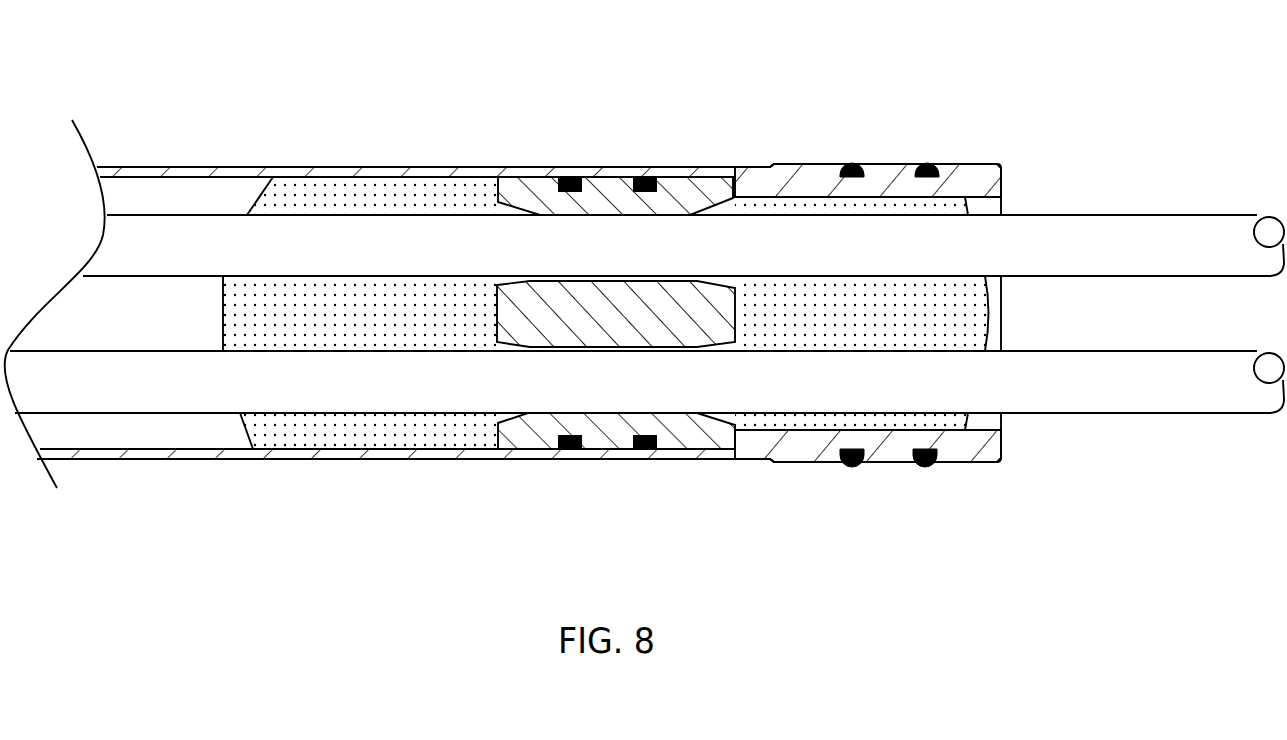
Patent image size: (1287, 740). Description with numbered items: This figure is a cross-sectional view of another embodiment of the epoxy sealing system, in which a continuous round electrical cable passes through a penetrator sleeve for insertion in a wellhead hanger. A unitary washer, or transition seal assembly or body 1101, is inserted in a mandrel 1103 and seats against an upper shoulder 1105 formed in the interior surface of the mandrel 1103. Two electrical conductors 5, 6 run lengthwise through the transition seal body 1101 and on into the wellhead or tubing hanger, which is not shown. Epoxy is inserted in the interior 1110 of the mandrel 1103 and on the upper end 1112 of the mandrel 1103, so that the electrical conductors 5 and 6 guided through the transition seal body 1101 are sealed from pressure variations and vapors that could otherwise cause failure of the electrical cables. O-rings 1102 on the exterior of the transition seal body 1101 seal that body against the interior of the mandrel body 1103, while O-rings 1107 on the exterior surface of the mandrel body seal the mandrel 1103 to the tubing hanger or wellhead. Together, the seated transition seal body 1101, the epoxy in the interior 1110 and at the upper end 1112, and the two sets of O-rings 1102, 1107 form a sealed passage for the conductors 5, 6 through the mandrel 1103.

The electrical conductor 5 is at (1090, 264).
The electrical conductor 6 is at (1090, 405).
The transition seal assembly or body 1101 is at (600, 193).
The O-rings 1102 is at (567, 449).
The mandrel 1103 is at (790, 447).
The upper shoulder 1105 is at (768, 165).
The O-rings 1107 is at (850, 163).
The interior of the mandrel 1110 is at (342, 197).
The upper end of the mandrel 1112 is at (922, 312).